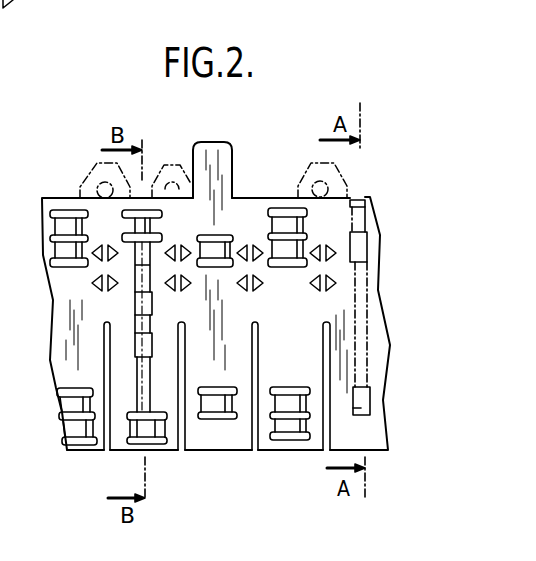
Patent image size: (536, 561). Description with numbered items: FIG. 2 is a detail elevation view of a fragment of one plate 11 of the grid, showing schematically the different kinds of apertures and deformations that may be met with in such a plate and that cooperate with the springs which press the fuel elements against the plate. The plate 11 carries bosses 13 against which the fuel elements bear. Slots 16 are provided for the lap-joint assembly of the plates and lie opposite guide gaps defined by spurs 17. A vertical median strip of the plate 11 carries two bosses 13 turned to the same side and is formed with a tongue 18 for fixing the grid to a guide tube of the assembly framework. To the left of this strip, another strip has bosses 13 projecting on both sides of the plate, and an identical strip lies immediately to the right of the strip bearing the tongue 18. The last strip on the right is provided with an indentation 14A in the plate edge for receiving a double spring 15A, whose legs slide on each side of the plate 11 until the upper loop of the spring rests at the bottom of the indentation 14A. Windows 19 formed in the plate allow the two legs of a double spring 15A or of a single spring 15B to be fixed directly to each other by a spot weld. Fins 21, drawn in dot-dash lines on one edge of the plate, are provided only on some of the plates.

The plate 11 is at (58, 203).
The bosses 13 is at (68, 252).
The indentation 14A is at (367, 210).
The double spring 15A is at (357, 201).
The single spring 15B is at (136, 315).
The slots 16 is at (326, 426).
The spurs 17 is at (258, 250).
The tongue 18 is at (202, 152).
The windows 19 is at (363, 388).
The fins 21 is at (90, 178).